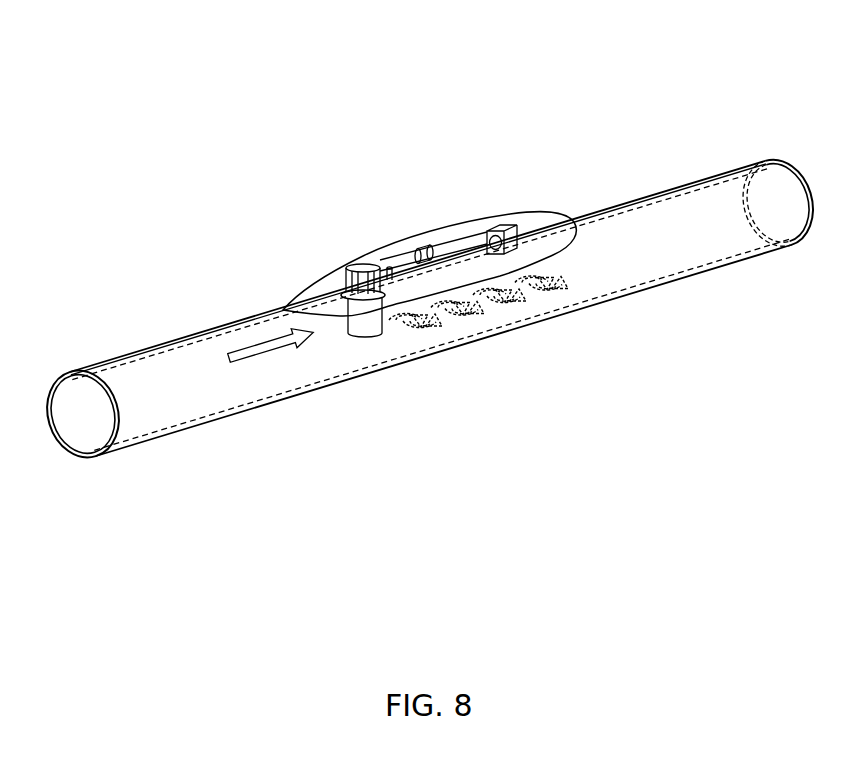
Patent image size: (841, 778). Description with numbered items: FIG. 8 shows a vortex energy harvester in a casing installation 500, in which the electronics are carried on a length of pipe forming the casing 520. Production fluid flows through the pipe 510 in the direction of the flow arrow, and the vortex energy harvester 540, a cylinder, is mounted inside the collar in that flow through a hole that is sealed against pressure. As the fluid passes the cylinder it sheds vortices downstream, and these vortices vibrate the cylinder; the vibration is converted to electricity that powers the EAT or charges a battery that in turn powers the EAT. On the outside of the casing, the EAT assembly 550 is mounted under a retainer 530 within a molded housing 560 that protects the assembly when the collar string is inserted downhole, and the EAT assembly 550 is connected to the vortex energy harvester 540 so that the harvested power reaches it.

The vortex flow meter system 500 is at (633, 100).
The pipe 510 is at (207, 330).
The casing 520 is at (253, 408).
The retainer 530 is at (327, 284).
The vortex energy harvester 540 is at (375, 332).
The EAT assembly 550 is at (462, 249).
The electronics housing 560 is at (555, 217).